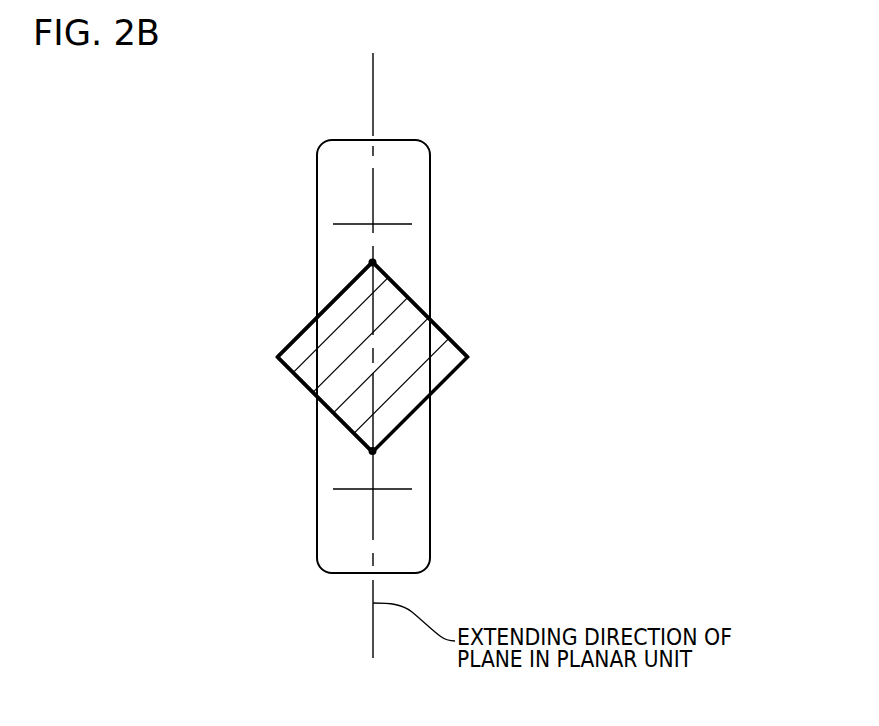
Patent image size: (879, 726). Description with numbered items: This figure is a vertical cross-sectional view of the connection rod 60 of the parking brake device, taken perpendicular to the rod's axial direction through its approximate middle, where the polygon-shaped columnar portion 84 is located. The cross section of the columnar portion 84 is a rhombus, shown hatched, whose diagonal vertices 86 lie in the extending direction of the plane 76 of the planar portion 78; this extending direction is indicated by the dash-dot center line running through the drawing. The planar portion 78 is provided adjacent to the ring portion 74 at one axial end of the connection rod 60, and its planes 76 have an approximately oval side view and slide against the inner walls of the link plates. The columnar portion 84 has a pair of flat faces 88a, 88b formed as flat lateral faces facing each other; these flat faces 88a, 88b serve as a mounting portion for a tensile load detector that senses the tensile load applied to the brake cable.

The connection rod 60 is at (471, 360).
The ring portion 74 is at (393, 139).
The plane 76 is at (317, 253).
The planar portion 78 is at (309, 455).
The columnar portion 84 is at (440, 326).
The diagonal vertices 86 is at (373, 263).
The flat face 88a is at (300, 334).
The flat face 88b is at (303, 384).